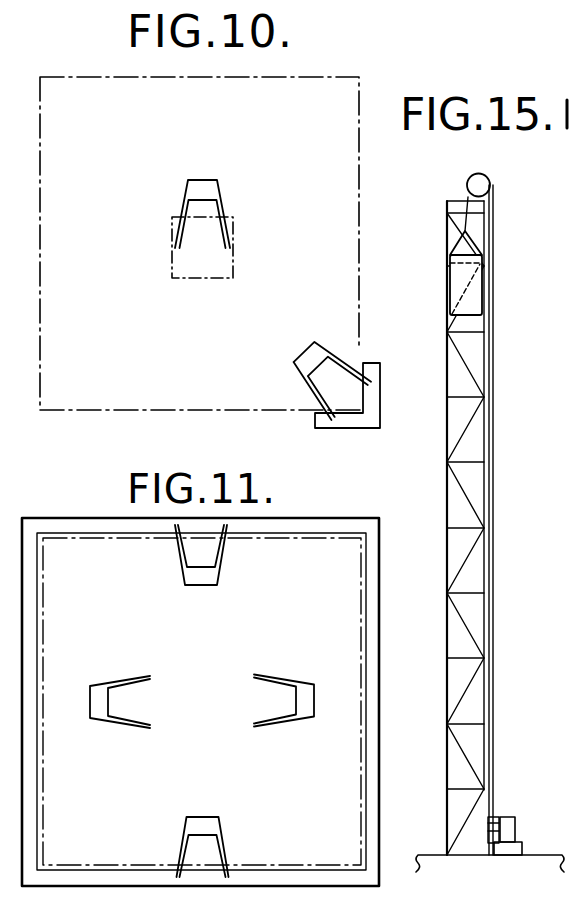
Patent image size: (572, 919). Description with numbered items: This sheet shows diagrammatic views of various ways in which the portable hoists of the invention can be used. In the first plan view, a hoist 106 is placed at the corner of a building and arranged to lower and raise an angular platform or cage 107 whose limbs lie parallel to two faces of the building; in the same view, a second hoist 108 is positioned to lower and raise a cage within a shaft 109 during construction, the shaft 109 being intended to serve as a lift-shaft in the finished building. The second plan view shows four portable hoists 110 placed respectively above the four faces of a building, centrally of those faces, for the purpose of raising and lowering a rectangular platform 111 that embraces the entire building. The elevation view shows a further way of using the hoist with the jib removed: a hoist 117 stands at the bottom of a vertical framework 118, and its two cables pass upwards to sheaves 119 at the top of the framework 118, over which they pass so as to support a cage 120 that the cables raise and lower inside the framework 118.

In FIG. 10, the hoist 106 is at (310, 356).
In FIG. 10, the angular platform or cage 107 is at (355, 424).
In FIG. 10, the hoist 108 is at (204, 190).
In FIG. 10, the shaft 109 is at (233, 264).
In FIG. 11, the pocket 110 is at (198, 577).
In FIG. 11, the rectangular platform 111 is at (372, 620).
In FIG. 15, the hoist 117 is at (511, 827).
In FIG. 15, the vertical framework 118 is at (447, 418).
In FIG. 15, the sheaves 119 is at (486, 182).
In FIG. 15, the cage 120 is at (475, 288).